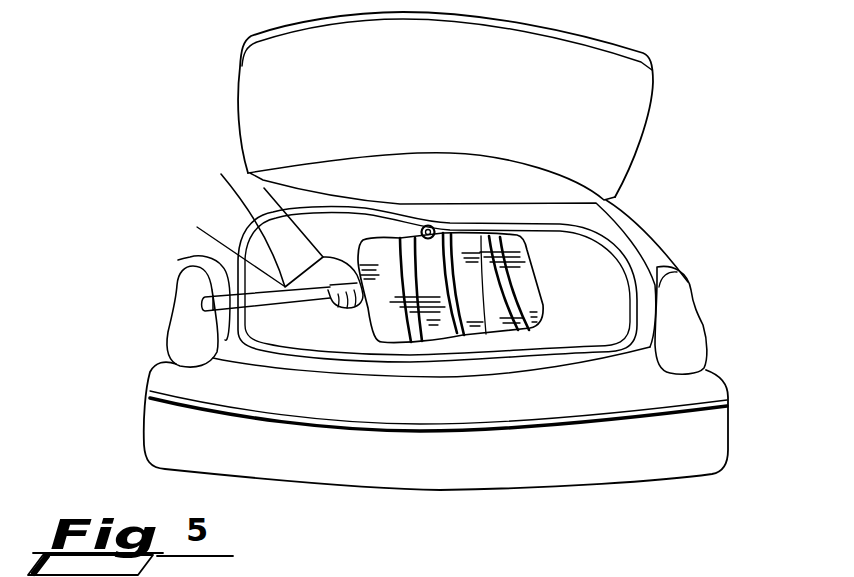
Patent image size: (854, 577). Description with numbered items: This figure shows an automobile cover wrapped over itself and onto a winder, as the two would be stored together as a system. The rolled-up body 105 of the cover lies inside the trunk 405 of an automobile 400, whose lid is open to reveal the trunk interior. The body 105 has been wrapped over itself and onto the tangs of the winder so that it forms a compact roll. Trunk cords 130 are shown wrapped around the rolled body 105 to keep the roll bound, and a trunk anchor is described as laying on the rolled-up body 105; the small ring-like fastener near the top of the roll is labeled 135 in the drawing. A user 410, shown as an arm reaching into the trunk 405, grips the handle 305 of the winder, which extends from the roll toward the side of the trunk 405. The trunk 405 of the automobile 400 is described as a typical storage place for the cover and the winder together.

The body 105 is at (403, 330).
The trunk cords 130 is at (450, 232).
The fastener ring 135 is at (431, 226).
The handle 305 is at (178, 260).
The automobile 400 is at (661, 219).
The trunk 405 is at (297, 330).
The user 410 is at (236, 224).